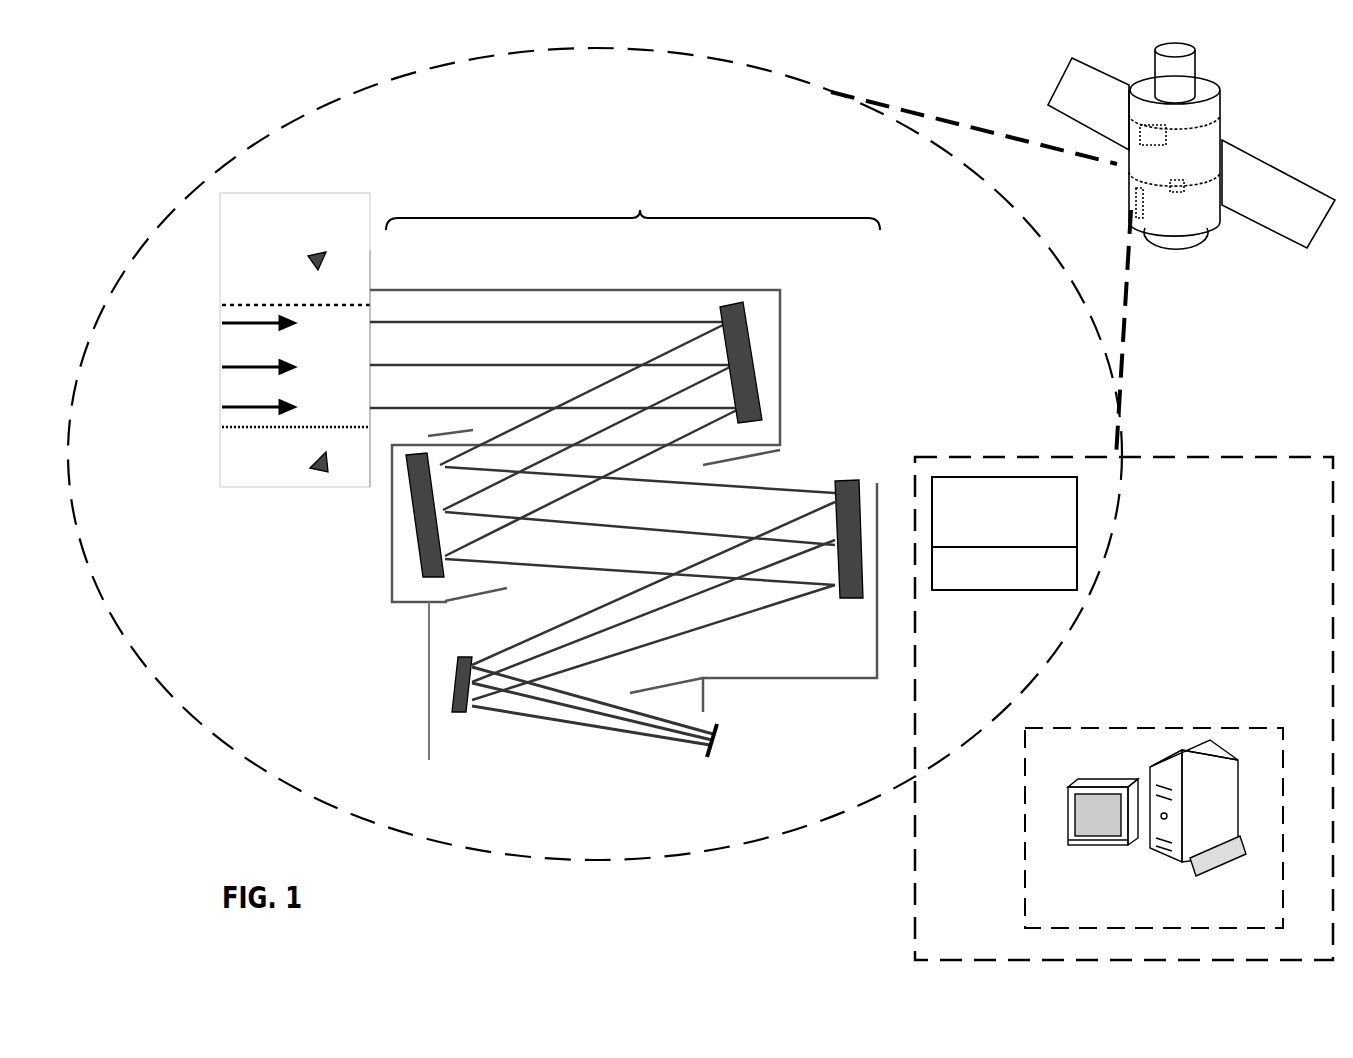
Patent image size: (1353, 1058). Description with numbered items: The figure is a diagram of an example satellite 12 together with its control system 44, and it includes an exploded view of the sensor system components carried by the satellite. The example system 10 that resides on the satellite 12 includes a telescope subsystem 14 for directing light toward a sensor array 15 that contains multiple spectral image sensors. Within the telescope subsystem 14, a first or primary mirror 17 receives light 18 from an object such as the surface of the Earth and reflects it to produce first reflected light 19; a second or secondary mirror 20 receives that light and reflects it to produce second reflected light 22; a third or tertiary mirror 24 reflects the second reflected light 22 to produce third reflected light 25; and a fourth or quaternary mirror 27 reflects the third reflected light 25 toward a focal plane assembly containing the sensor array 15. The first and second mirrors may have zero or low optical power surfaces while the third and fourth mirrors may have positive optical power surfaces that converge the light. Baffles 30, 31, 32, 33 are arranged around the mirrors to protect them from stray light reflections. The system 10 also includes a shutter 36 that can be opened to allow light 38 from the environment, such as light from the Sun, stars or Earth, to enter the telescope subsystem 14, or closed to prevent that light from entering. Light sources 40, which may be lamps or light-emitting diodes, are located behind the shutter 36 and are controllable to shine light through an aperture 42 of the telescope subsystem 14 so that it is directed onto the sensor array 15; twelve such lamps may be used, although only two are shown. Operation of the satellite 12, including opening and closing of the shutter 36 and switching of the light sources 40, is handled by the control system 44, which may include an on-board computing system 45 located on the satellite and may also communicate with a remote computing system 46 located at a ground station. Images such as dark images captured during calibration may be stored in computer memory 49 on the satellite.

The system 10 is at (290, 110).
The satellite 12 is at (1225, 140).
The telescope subsystem 14 is at (633, 202).
The sensor array 15 is at (714, 748).
The first mirror 17 is at (757, 352).
The light 18 is at (592, 320).
The first reflected light 19 is at (590, 390).
The second mirror 20 is at (410, 538).
The second reflected light 22 is at (600, 532).
The third mirror 24 is at (872, 472).
The third reflected light 25 is at (744, 612).
The fourth mirror 27 is at (458, 690).
The baffle 30 is at (738, 470).
The baffle 31 is at (480, 432).
The baffle 32 is at (483, 597).
The baffle 33 is at (647, 690).
The shutter 36 is at (234, 274).
The light from the environment 38 is at (208, 322).
The light sources 40 is at (308, 258).
The aperture 42 is at (370, 356).
The control system 44 is at (1225, 457).
The on-board computing system 45 is at (1027, 477).
The remote computing system 46 is at (1122, 728).
The computer memory 49 is at (1030, 580).